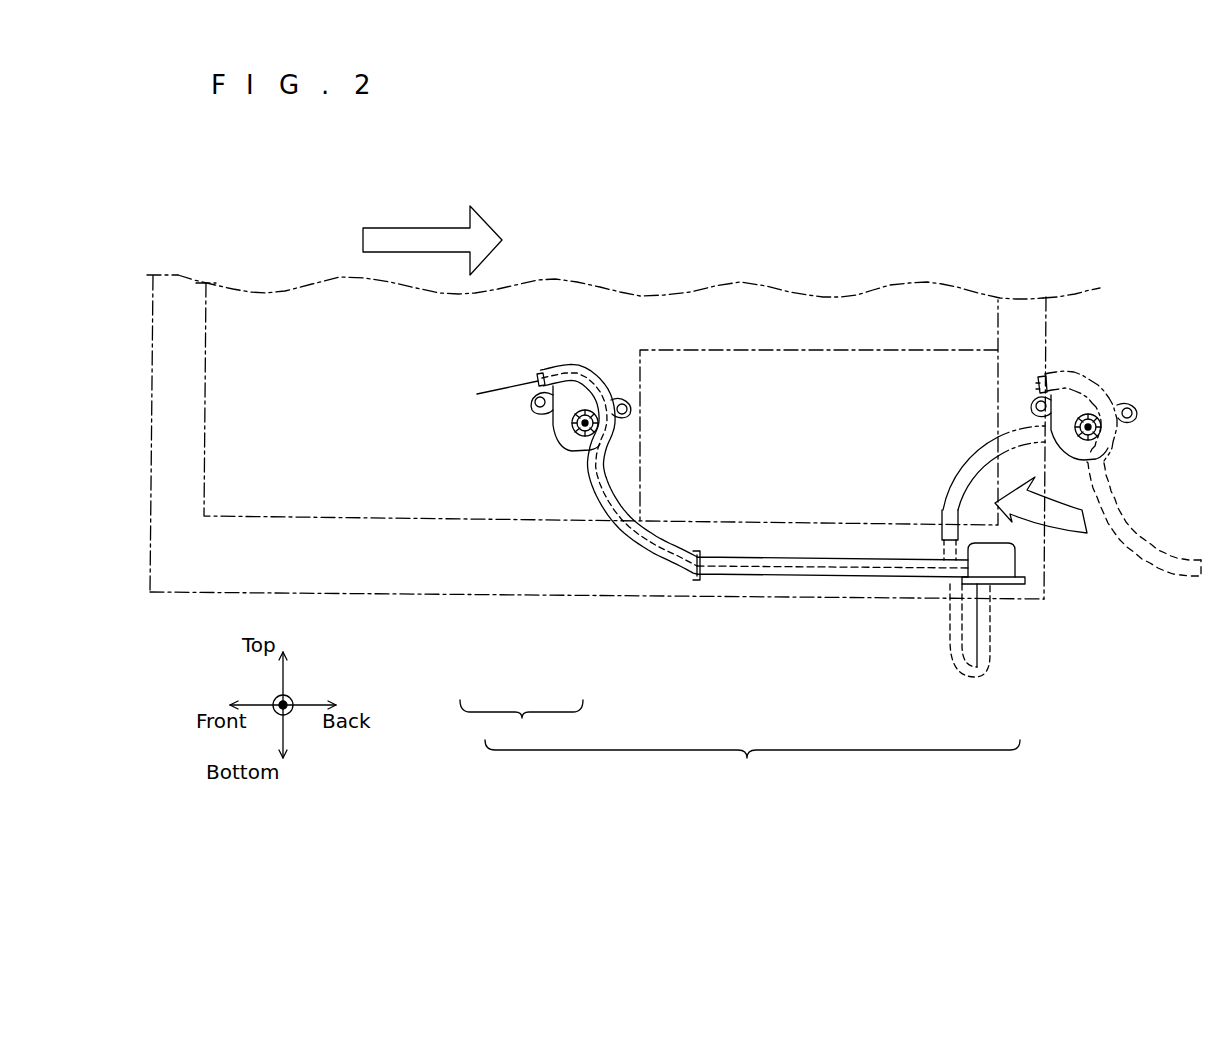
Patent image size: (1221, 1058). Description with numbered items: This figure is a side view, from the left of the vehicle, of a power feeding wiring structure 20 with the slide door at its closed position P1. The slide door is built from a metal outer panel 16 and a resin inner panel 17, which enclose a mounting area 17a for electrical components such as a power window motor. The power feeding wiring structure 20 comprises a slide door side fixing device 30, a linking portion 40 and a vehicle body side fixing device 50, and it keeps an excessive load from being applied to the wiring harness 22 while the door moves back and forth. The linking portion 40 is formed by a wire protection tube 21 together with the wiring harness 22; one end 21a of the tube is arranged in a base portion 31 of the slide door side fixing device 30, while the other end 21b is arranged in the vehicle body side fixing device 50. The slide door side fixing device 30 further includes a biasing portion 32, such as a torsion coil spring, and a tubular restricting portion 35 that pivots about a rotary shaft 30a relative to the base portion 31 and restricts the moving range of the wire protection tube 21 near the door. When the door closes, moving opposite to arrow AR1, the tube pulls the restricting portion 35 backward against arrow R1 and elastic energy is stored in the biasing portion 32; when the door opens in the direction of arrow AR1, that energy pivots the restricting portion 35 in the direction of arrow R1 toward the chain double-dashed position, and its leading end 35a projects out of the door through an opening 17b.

The outer panel 16 is at (1048, 330).
The inner panel 17 is at (1005, 325).
The mounting area 17a is at (770, 410).
The opening 17b is at (525, 531).
The power feeding wiring structure 20 is at (752, 763).
The wire protection tube 21 is at (650, 548).
The one end of the wire protection tube 21a is at (560, 367).
The other end of the wire protection tube 21b is at (945, 548).
The wiring harness 22 is at (507, 382).
The slide door side fixing device 30 is at (521, 722).
The rotary shaft 30a is at (580, 440).
The base portion 31 is at (557, 433).
The biasing portion 32 is at (582, 438).
The restricting portion 35 is at (588, 462).
The leading end of the restricting portion 35a is at (698, 556).
The linking portion 40 is at (840, 578).
The vehicle body side fixing device 50 is at (1028, 563).
The arrow AR1 is at (435, 225).
The closed position P1 is at (777, 600).
The arrow R1 is at (1057, 535).